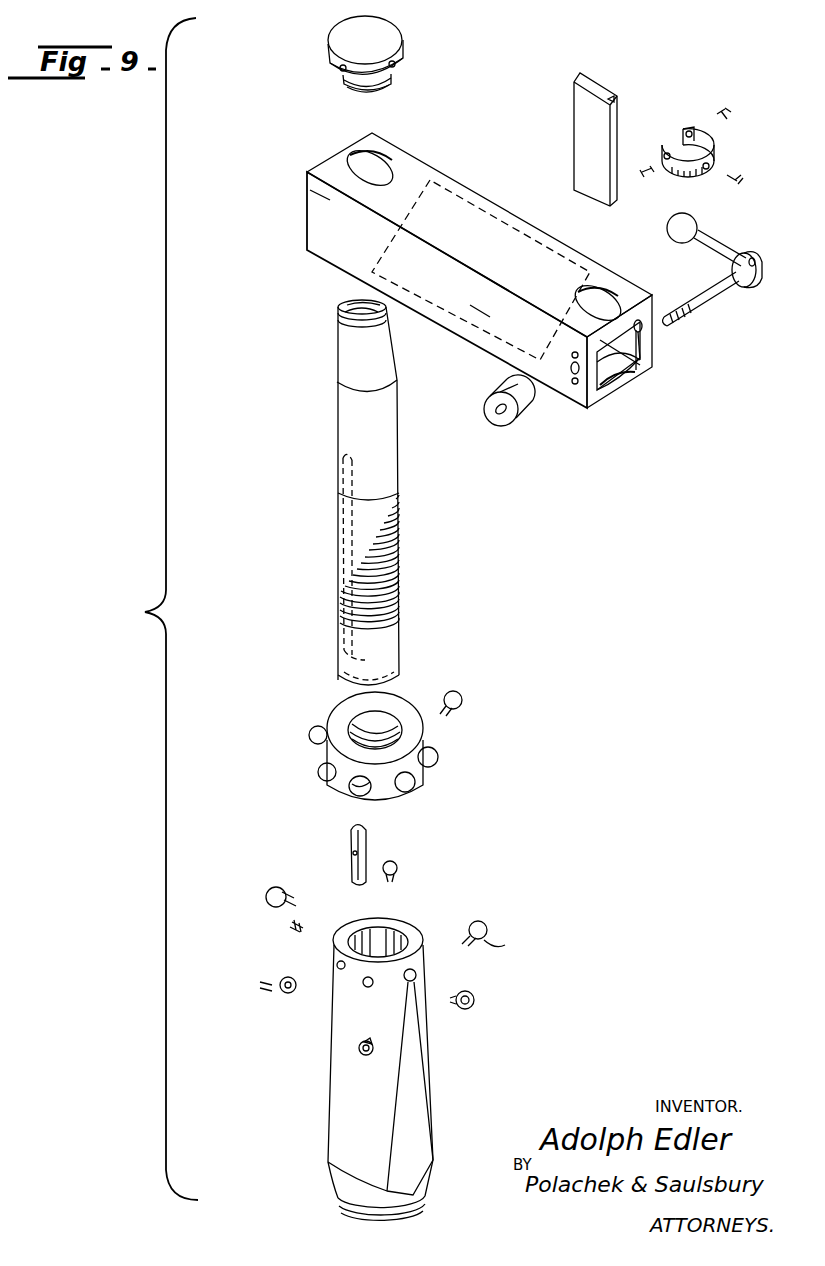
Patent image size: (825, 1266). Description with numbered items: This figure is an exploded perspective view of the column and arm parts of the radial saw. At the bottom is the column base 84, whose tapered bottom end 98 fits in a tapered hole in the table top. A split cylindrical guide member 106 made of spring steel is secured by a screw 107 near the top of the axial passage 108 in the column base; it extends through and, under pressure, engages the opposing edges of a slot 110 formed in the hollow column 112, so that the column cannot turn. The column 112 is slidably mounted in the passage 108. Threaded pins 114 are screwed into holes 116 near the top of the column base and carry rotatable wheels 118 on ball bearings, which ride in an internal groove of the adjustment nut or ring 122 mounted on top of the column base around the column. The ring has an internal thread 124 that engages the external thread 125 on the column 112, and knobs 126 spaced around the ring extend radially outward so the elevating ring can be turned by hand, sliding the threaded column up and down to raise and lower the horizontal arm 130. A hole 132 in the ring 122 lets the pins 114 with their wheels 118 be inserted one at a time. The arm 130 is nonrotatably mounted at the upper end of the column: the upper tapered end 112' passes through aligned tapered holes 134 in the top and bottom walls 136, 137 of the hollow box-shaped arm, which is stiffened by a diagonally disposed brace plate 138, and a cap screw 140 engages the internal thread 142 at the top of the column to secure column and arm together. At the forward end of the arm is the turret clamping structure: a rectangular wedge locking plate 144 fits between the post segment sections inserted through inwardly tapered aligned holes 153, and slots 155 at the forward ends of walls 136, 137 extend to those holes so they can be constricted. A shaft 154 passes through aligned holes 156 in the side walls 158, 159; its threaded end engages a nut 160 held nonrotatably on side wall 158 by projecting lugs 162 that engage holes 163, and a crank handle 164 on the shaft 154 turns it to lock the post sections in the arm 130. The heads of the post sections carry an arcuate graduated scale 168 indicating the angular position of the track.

The column base 84 is at (328, 1072).
The tapered bottom end 98 is at (345, 1185).
The split cylindrical guide member 106 is at (348, 850).
The screw 107 is at (288, 922).
The axial passage 108 is at (400, 930).
The slot 110 is at (352, 552).
The hollow column 112 is at (400, 492).
The upper tapered end 112' is at (317, 365).
The threaded pins 114 is at (475, 945).
The holes 116 is at (364, 985).
The rotatable wheels 118 is at (488, 938).
The adjustment nut or ring 122 is at (405, 700).
The internal thread 124 is at (360, 722).
The external thread 125 is at (383, 598).
The knobs 126 is at (462, 700).
The horizontal arm 130 is at (325, 214).
The hole 132 is at (355, 795).
The tapered holes 134 is at (378, 160).
The top wall 136 is at (468, 218).
The bottom wall 137 is at (632, 400).
The stiffener or brace plate 138 is at (380, 257).
The cap screw 140 is at (336, 42).
The internal thread 142 is at (345, 312).
The wedge locking plate 144 is at (596, 178).
The aligned holes 153 is at (606, 290).
The shaft 154 is at (720, 282).
The slots 155 is at (615, 395).
The aligned holes 156 is at (630, 375).
The side wall 158 is at (492, 325).
The side wall 159 is at (652, 335).
The nut 160 is at (503, 426).
The projecting lugs 162 is at (525, 385).
The holes 163 is at (575, 385).
The crank handle 164 is at (712, 232).
The arcuate graduated scale 168 is at (712, 172).